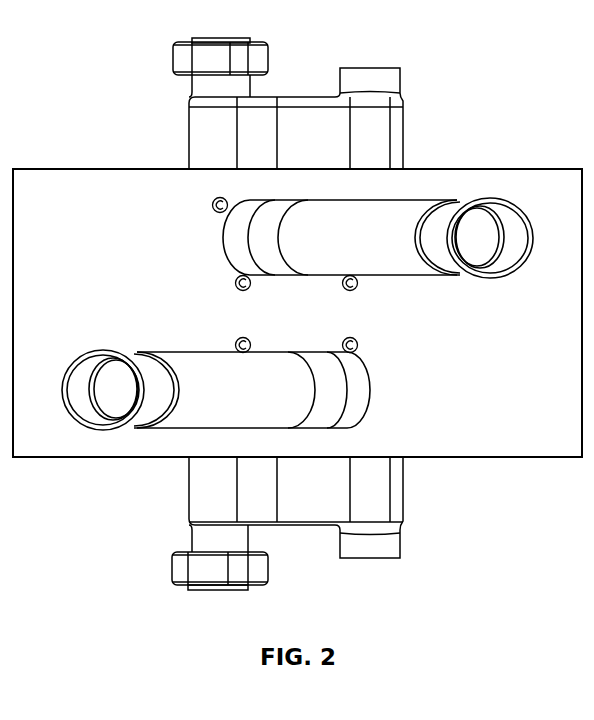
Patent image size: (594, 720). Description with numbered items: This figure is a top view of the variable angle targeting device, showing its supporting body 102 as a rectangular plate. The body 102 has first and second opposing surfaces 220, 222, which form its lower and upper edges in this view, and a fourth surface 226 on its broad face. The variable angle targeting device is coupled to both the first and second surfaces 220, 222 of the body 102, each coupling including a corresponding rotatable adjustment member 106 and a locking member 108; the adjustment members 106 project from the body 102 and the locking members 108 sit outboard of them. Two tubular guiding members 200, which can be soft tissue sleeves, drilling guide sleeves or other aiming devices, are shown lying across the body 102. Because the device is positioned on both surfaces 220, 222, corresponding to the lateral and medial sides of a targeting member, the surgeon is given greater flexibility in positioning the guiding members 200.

The supporting body 102 is at (560, 423).
The rotatable adjustment member 106 is at (366, 134).
The locking member 108 is at (200, 84).
The tubular guiding member 200 is at (358, 252).
The first surface 220 is at (490, 460).
The second surface 222 is at (525, 169).
The fourth surface 226 is at (510, 338).